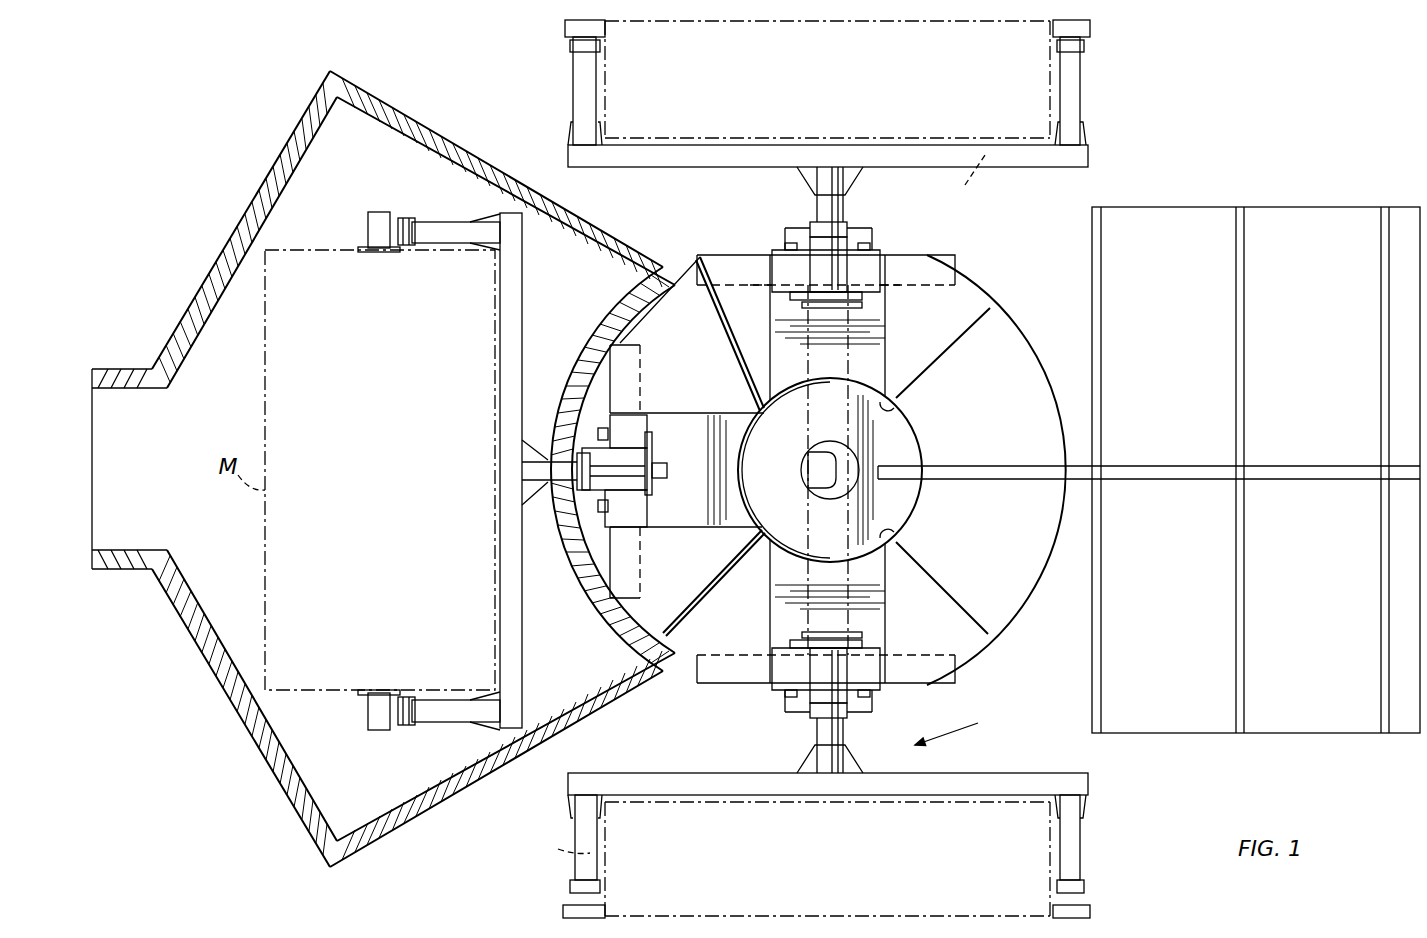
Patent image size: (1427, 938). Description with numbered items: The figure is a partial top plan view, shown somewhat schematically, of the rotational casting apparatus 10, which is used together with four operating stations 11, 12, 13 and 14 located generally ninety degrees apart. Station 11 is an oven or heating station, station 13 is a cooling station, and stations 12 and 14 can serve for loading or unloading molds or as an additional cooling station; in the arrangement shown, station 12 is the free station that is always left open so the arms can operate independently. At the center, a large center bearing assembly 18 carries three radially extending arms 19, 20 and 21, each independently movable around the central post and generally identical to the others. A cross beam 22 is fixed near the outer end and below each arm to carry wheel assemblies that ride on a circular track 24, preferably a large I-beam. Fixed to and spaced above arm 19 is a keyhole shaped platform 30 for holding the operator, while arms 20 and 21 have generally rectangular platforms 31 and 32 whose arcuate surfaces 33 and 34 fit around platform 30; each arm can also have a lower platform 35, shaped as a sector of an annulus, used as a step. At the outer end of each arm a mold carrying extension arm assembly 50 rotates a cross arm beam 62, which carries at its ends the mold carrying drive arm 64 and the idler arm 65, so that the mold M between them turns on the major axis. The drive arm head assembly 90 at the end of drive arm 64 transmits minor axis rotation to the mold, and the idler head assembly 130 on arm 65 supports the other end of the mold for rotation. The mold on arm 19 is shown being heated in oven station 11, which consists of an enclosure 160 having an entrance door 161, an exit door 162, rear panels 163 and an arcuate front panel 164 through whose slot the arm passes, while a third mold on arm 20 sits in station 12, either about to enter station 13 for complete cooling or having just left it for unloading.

The apparatus for rotationally casting an article 10 is at (995, 281).
The oven or heating station 11 is at (472, 146).
The operating station 12 is at (1107, 77).
The cooling station 13 is at (1282, 197).
The operating station 14 is at (1104, 851).
The center bearing assembly 18 is at (852, 479).
The arm 19 is at (738, 448).
The arm 20 is at (882, 325).
The arm 21 is at (870, 580).
The cross beam 22 is at (640, 556).
The circular track 24 is at (993, 515).
The keyhole shaped platform 30 is at (905, 445).
The platform 31 is at (768, 318).
The platform 32 is at (785, 616).
The arcuate surface 33 is at (897, 414).
The arcuate surface 34 is at (900, 522).
The lower platform 35 is at (982, 316).
The mold carrying extension arm assembly 50 is at (842, 245).
The cross arm beam 62 is at (503, 395).
The mold carrying drive arm 64 is at (447, 702).
The idler arm 65 is at (445, 222).
The drive arm head assembly 90 is at (358, 714).
The idler head assembly 130 is at (366, 226).
The enclosure 160 is at (136, 366).
The entrance door 161 is at (455, 805).
The exit door 162 is at (404, 112).
The rear panels 163 is at (232, 242).
The arcuate front panel 164 is at (580, 347).